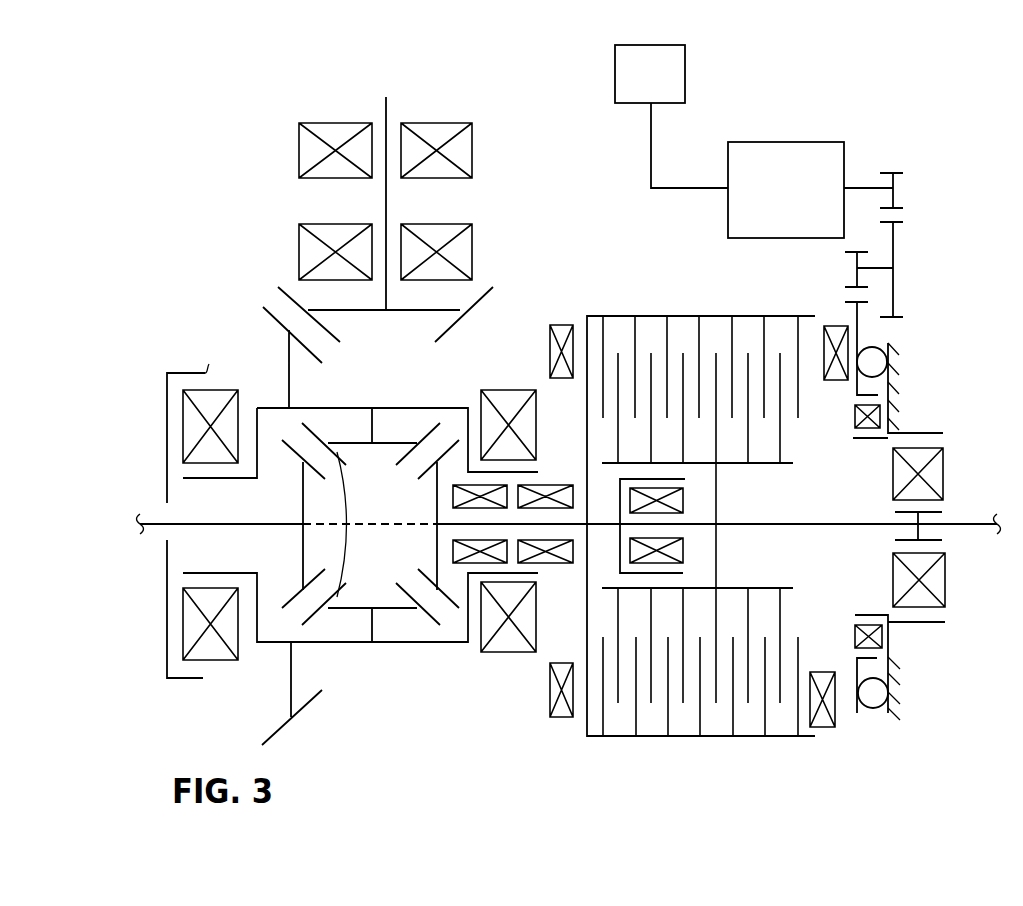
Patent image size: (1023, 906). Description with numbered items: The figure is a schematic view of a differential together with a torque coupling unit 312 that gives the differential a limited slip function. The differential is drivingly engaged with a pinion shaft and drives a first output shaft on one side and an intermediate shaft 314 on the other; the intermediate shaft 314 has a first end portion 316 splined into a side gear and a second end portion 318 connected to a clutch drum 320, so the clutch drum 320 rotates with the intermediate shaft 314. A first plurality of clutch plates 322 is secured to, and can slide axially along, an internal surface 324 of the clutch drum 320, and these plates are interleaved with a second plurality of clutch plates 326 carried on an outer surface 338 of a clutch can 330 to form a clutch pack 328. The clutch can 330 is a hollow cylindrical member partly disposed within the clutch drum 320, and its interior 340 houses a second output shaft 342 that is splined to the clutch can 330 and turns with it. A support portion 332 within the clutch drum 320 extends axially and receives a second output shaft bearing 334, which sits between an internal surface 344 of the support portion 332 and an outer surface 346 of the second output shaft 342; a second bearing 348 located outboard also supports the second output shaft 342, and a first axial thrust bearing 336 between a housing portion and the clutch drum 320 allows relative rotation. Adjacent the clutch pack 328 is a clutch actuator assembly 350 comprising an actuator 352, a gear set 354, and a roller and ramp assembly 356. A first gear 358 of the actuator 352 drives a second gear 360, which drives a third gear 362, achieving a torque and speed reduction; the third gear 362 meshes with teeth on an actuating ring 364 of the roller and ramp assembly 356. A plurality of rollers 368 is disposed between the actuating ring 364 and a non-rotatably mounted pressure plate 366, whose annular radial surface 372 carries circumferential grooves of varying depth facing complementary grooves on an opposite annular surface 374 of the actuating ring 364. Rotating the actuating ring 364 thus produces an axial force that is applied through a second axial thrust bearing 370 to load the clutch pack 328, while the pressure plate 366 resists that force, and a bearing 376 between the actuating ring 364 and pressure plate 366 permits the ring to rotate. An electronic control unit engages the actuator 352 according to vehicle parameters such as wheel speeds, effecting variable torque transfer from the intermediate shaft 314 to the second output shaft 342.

The torque coupling unit 312 is at (884, 85).
The intermediate shaft 314 is at (449, 524).
The first end portion 316 is at (437, 527).
The second end portion 318 is at (583, 522).
The clutch drum 320 is at (598, 737).
The first plurality of clutch plates 322 is at (672, 723).
The internal surface 324 is at (818, 732).
The second plurality of clutch plates 326 is at (718, 707).
The clutch pack 328 is at (590, 303).
The clutch can 330 is at (765, 588).
The support portion 332 is at (685, 575).
The second output shaft bearing 334 is at (685, 498).
The first axial thrust bearing 336 is at (550, 707).
The outer surface 338 is at (805, 582).
The interior 340 is at (793, 466).
The second output shaft 342 is at (983, 528).
The internal surface 344 is at (685, 481).
The outer surface 346 is at (683, 528).
The second bearing 348 is at (943, 476).
The clutch actuator assembly 350 is at (914, 129).
The actuator 352 is at (813, 142).
The gear set 354 is at (897, 269).
The roller and ramp assembly 356 is at (904, 363).
The first gear 358 is at (897, 170).
The second gear 360 is at (893, 230).
The third gear 362 is at (857, 268).
The actuating ring 364 is at (863, 312).
The pressure plate 366 is at (887, 688).
The rollers 368 is at (872, 707).
The second axial thrust bearing 370 is at (837, 382).
The annular radial surface 372 is at (883, 708).
The opposite annular surface 374 is at (857, 332).
The bearing 376 is at (852, 637).